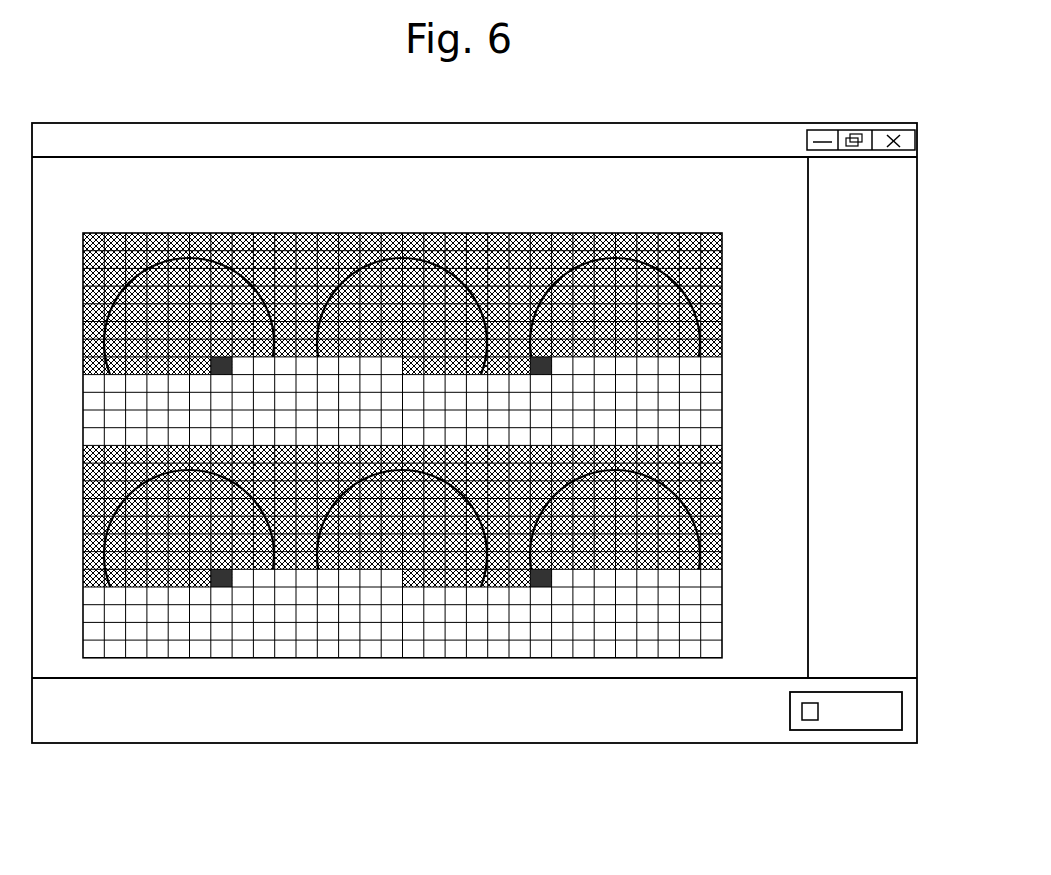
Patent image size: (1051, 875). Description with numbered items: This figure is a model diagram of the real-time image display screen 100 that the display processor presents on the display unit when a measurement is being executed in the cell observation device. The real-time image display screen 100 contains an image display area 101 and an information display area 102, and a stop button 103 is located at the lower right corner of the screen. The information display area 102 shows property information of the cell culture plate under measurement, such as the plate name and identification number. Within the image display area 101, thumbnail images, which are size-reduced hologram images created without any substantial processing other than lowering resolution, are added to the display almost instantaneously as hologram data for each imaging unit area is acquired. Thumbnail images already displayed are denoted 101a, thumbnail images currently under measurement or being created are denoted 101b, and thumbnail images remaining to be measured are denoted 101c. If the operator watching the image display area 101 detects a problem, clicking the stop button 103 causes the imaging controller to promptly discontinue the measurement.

The real-time image display screen 100 is at (598, 123).
The image display area 101 is at (393, 445).
The thumbnail images already displayed 101a is at (162, 583).
The thumbnail images currently under measurement or being created 101b is at (222, 580).
The thumbnail images remaining to be subjected to the measurement 101c is at (265, 652).
The information display area 102 is at (867, 187).
The stop button 103 is at (850, 728).